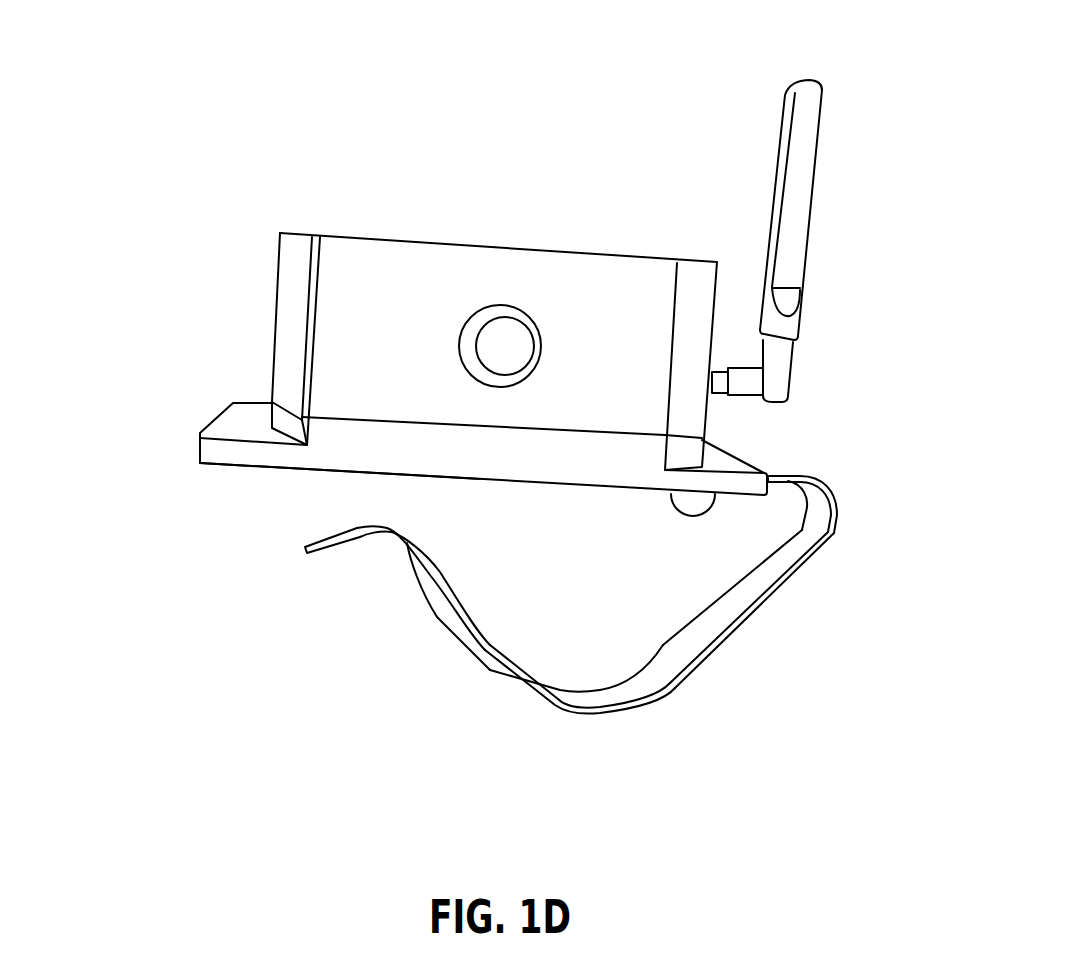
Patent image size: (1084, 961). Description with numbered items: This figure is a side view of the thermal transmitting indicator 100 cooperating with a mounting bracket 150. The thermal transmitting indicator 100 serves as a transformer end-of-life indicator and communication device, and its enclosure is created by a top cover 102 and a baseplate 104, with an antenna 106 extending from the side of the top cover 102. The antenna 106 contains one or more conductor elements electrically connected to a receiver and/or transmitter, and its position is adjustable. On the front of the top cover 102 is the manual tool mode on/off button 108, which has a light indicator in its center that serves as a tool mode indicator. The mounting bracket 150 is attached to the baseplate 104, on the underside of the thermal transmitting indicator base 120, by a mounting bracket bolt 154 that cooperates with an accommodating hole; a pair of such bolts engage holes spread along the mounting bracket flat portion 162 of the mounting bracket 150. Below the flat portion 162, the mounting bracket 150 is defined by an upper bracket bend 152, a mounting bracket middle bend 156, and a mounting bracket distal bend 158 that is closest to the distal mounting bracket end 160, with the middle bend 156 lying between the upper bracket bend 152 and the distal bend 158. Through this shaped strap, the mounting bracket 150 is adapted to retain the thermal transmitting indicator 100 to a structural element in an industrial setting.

The thermal transmitting indicator 100 is at (531, 43).
The top cover 102 is at (620, 300).
The baseplate 104 is at (200, 458).
The antenna 106 is at (808, 264).
The manual tool mode on/off button 108 is at (459, 338).
The thermal transmitting indicator base 120 is at (258, 476).
The mounting bracket 150 is at (778, 476).
The upper bracket bend 152 is at (840, 513).
The mounting bracket bolt 154 is at (682, 518).
The mounting bracket middle bend 156 is at (587, 714).
The mounting bracket distal bend 158 is at (407, 543).
The distal mounting bracket end 160 is at (312, 556).
The mounting bracket flat portion 162 is at (776, 488).